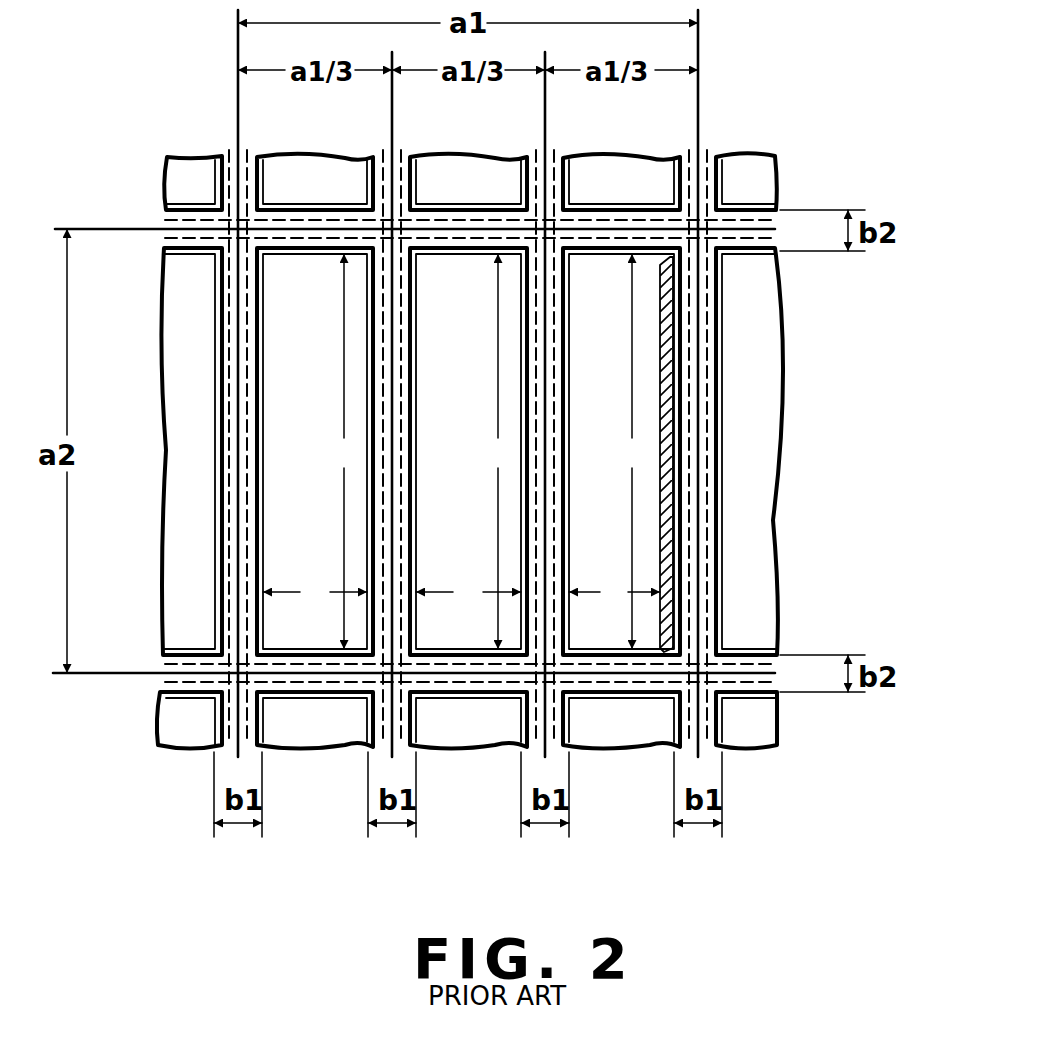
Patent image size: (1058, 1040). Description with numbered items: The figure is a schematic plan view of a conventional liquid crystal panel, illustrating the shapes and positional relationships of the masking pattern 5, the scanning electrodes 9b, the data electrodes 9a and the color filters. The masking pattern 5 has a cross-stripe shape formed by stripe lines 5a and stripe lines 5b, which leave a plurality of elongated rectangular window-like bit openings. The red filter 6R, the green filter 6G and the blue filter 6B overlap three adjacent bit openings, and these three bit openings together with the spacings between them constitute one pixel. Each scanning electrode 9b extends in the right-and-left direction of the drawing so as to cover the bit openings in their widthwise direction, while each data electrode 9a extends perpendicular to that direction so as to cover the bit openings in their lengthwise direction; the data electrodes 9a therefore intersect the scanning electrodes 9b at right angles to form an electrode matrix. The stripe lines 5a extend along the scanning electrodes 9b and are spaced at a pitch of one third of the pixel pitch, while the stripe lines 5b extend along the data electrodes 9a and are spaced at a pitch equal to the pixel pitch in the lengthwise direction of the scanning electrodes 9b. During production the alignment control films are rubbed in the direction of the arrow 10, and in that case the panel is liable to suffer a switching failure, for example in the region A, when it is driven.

The masking pattern 5 is at (103, 73).
The stripe line 5a is at (198, 178).
The stripe line 5b is at (182, 205).
The data electrode 9a is at (245, 158).
The scanning electrode 9b is at (163, 238).
The red filter 6R is at (325, 366).
The green filter 6G is at (482, 366).
The blue filter 6B is at (628, 366).
The region A is at (651, 400).
The arrow 10 is at (942, 592).